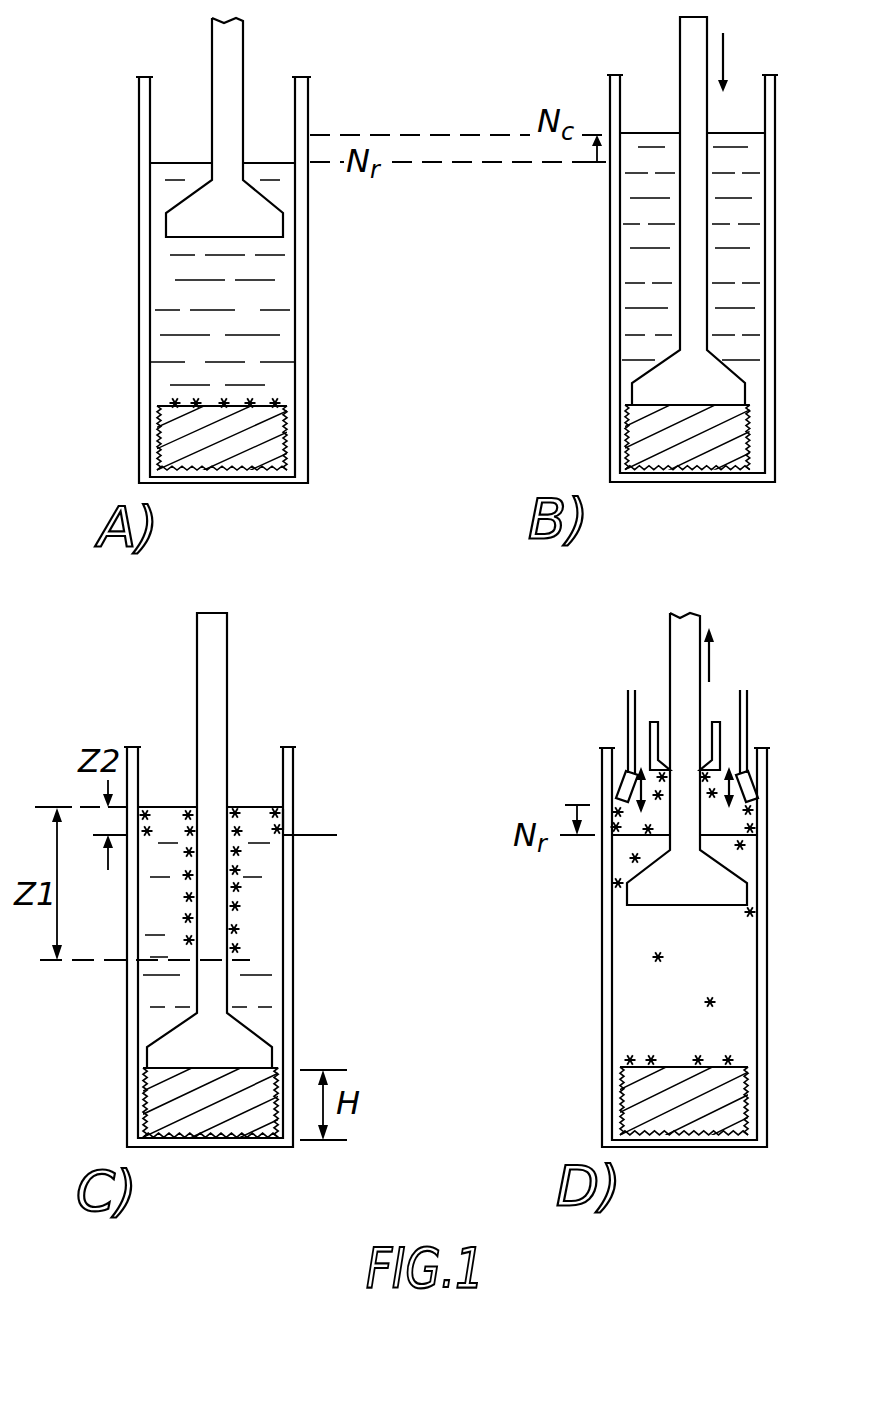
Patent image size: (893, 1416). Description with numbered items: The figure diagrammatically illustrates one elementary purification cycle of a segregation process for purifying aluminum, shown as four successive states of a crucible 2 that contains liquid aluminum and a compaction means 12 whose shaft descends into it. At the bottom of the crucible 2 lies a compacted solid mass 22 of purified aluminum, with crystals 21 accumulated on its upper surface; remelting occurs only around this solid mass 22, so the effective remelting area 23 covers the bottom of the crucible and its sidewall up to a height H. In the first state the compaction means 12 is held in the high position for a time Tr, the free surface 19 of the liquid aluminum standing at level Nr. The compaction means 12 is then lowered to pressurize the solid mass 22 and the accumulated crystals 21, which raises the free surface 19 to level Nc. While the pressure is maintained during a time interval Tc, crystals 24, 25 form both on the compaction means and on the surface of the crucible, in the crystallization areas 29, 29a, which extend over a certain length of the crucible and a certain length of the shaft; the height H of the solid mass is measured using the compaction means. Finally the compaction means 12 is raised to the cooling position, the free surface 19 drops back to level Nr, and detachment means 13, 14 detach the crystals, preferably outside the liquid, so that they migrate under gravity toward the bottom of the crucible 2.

The crucible 2 is at (300, 278).
The compaction means 12 is at (218, 128).
The detachment means 13 is at (715, 735).
The detachment means 14 is at (752, 788).
The free surface 19 is at (260, 162).
The crystals 21 is at (258, 403).
The solid mass 22 is at (188, 438).
The effective remelting area 23 is at (143, 1090).
The crystals 24 is at (236, 930).
The crystals 25 is at (278, 830).
The crystallization area 29 is at (296, 812).
The crystallization area 29a is at (258, 887).